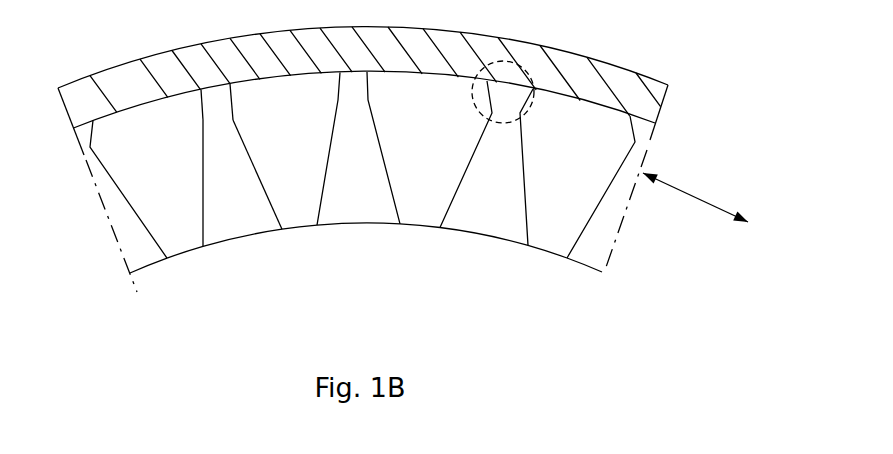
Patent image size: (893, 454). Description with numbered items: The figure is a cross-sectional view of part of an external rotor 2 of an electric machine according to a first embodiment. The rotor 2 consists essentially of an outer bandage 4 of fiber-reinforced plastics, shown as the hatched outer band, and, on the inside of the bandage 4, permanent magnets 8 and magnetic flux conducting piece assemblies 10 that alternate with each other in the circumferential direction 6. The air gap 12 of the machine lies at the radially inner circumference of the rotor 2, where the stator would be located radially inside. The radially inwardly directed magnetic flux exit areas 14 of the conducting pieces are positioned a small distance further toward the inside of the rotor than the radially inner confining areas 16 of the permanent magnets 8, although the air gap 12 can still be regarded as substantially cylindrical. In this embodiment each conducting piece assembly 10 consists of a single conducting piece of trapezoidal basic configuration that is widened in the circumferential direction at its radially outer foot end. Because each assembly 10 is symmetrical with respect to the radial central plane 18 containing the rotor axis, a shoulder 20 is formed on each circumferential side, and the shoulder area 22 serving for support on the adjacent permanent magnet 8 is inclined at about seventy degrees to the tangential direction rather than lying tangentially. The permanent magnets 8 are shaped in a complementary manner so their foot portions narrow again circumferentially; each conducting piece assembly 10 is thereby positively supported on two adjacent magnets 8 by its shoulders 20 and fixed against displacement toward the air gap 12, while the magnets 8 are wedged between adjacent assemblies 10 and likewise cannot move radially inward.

The rotor 2 is at (658, 141).
The outer bandage 4 is at (110, 78).
The circumferential direction 6 is at (684, 192).
The permanent magnet 8 is at (127, 186).
The magnetic flux conducting piece assembly 10 is at (261, 222).
The air gap 12 is at (170, 292).
The magnetic flux exit area 14 is at (368, 227).
The radially inner confining area 16 is at (426, 223).
The radial central plane 18 is at (223, 177).
The shoulder 20 is at (200, 100).
The shoulder area 22 is at (200, 113).